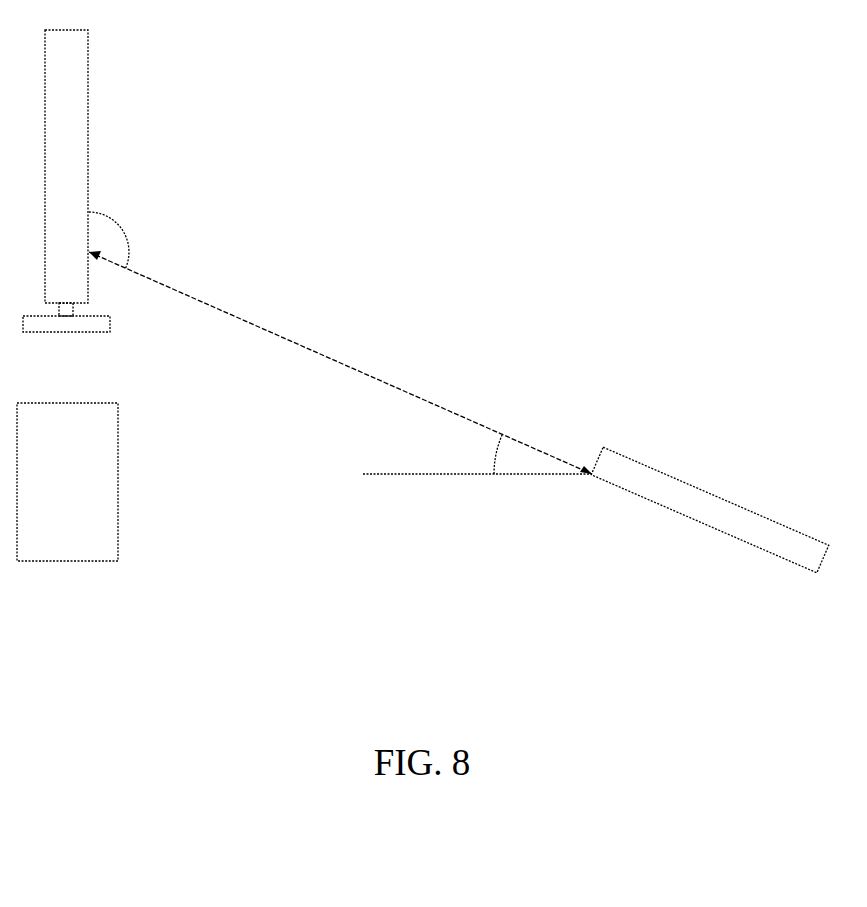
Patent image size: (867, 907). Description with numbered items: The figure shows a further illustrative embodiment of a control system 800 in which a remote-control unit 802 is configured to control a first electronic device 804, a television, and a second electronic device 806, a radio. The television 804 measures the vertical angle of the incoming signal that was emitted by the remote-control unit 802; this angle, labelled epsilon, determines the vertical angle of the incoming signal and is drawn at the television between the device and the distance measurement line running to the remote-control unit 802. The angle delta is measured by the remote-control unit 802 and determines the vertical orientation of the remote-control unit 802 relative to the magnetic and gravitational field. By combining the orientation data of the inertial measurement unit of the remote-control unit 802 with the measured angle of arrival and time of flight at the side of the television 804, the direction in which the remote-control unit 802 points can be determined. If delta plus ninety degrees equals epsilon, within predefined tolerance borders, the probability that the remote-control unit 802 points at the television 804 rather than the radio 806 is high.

The control system 800 is at (667, 181).
The remote-control unit 802 is at (627, 490).
The first electronic device (television) 804 is at (89, 163).
The second electronic device (radio) 806 is at (118, 497).